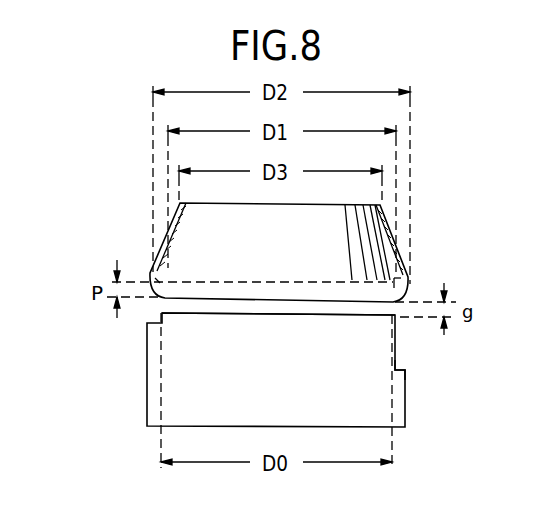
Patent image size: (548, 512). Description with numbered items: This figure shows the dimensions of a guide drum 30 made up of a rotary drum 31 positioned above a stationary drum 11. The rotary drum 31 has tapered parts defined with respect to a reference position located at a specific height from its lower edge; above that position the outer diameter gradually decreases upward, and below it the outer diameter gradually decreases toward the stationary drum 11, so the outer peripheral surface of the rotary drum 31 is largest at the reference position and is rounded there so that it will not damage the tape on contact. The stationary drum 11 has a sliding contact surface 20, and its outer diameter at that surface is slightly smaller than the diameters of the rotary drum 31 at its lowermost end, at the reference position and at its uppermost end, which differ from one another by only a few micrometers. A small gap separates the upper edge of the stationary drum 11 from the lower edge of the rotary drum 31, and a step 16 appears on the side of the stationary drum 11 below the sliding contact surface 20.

The guide drum 30 is at (421, 228).
The rotary drum 31 is at (329, 213).
The stationary drum 11 is at (155, 366).
The sliding contact surface 20 is at (396, 332).
The step 16 is at (399, 372).